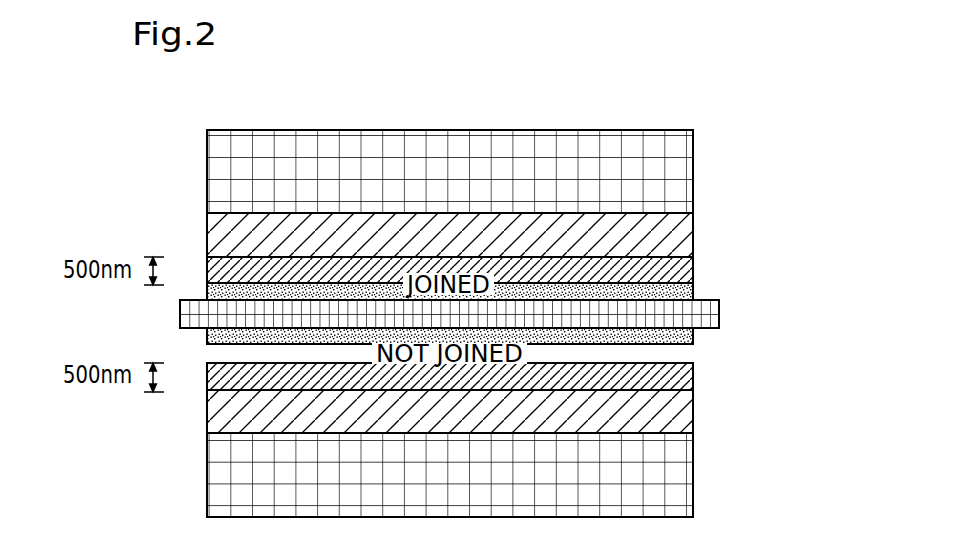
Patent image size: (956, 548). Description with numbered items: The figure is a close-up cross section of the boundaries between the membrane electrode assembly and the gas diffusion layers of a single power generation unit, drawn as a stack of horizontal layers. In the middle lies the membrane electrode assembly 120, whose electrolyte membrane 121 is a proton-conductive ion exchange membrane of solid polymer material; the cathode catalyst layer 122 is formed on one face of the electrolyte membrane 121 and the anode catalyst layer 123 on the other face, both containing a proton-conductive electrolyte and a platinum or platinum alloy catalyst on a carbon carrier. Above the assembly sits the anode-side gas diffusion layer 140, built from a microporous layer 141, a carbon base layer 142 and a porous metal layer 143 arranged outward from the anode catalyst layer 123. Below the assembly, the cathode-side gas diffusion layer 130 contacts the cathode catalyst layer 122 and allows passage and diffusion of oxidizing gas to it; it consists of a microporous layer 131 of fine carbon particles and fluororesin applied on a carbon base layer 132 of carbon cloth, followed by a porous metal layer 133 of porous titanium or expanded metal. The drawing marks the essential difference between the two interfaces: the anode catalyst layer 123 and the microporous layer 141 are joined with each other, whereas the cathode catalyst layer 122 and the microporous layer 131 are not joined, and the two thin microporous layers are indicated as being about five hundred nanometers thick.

The membrane electrode assembly 120 is at (519, 315).
The electrolyte membrane 121 is at (719, 313).
The cathode catalyst layer 122 is at (693, 337).
The anode catalyst layer 123 is at (693, 289).
The cathode-side gas diffusion layer 130 is at (510, 440).
The microporous layer 131 is at (693, 378).
The carbon base layer 132 is at (693, 410).
The porous metal layer 133 is at (478, 475).
The anode-side gas diffusion layer 140 is at (507, 205).
The microporous layer 141 is at (477, 268).
The carbon base layer 142 is at (693, 238).
The porous metal layer 143 is at (693, 140).